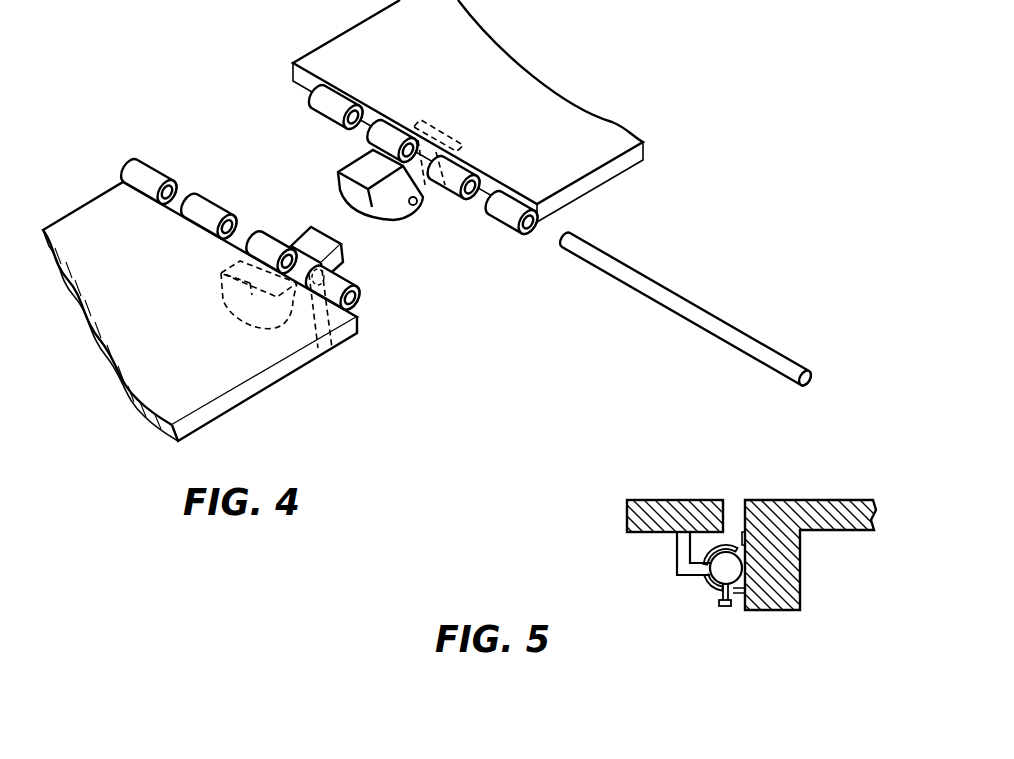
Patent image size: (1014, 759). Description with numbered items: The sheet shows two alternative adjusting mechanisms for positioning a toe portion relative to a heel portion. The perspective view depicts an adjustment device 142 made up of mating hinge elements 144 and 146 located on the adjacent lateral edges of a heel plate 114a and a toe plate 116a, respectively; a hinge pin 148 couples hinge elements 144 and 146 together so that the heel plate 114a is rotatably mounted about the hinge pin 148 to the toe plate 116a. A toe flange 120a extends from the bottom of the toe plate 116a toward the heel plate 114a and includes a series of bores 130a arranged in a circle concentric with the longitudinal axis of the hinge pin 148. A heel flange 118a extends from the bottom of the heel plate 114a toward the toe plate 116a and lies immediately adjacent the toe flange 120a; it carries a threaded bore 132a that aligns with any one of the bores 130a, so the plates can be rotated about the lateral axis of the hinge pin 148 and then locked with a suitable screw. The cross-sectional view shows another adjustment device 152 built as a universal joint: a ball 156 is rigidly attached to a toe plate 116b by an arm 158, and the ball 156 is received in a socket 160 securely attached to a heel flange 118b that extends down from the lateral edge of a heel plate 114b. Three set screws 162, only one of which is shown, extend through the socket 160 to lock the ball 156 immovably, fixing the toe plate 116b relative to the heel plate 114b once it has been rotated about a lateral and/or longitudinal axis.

In FIG. 4, the heel plate 114a is at (627, 141).
In FIG. 4, the toe plate 116a is at (97, 213).
In FIG. 4, the heel flange 118a is at (358, 170).
In FIG. 4, the toe flange 120a is at (303, 232).
In FIG. 4, the bores 130a is at (323, 335).
In FIG. 4, the threaded bore 132a is at (417, 205).
In FIG. 4, the adjustment device 142 is at (427, 345).
In FIG. 4, the hinge elements 144 is at (508, 222).
In FIG. 4, the hinge elements 146 is at (212, 198).
In FIG. 4, the hinge pin 148 is at (643, 277).
In FIG. 5, the adjustment device 152 is at (636, 635).
In FIG. 5, the ball 156 is at (712, 567).
In FIG. 5, the arm 158 is at (673, 554).
In FIG. 5, the socket 160 is at (713, 592).
In FIG. 5, the set screws 162 is at (727, 606).
In FIG. 5, the toe plate 116b is at (678, 500).
In FIG. 5, the heel plate 114b is at (835, 500).
In FIG. 5, the heel flange 118b is at (803, 575).